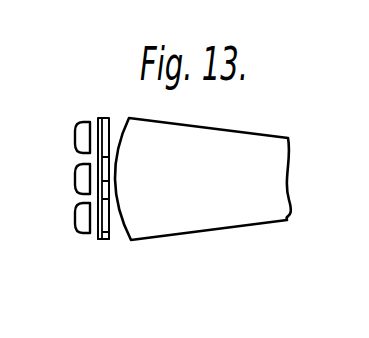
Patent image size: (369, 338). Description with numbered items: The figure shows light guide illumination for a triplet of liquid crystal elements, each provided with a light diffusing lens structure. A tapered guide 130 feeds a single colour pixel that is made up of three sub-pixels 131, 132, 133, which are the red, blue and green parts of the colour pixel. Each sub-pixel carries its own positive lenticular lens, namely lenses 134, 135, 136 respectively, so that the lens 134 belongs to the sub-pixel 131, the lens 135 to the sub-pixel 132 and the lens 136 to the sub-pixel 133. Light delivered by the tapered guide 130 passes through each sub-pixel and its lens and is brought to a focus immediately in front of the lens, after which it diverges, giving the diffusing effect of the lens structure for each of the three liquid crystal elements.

The tapered guide 130 is at (214, 143).
The sub-pixel 131 is at (108, 118).
The sub-pixel 132 is at (98, 185).
The sub-pixel 133 is at (97, 238).
The positive lenticular lens 134 is at (78, 134).
The positive lenticular lens 135 is at (75, 176).
The positive lenticular lens 136 is at (87, 216).